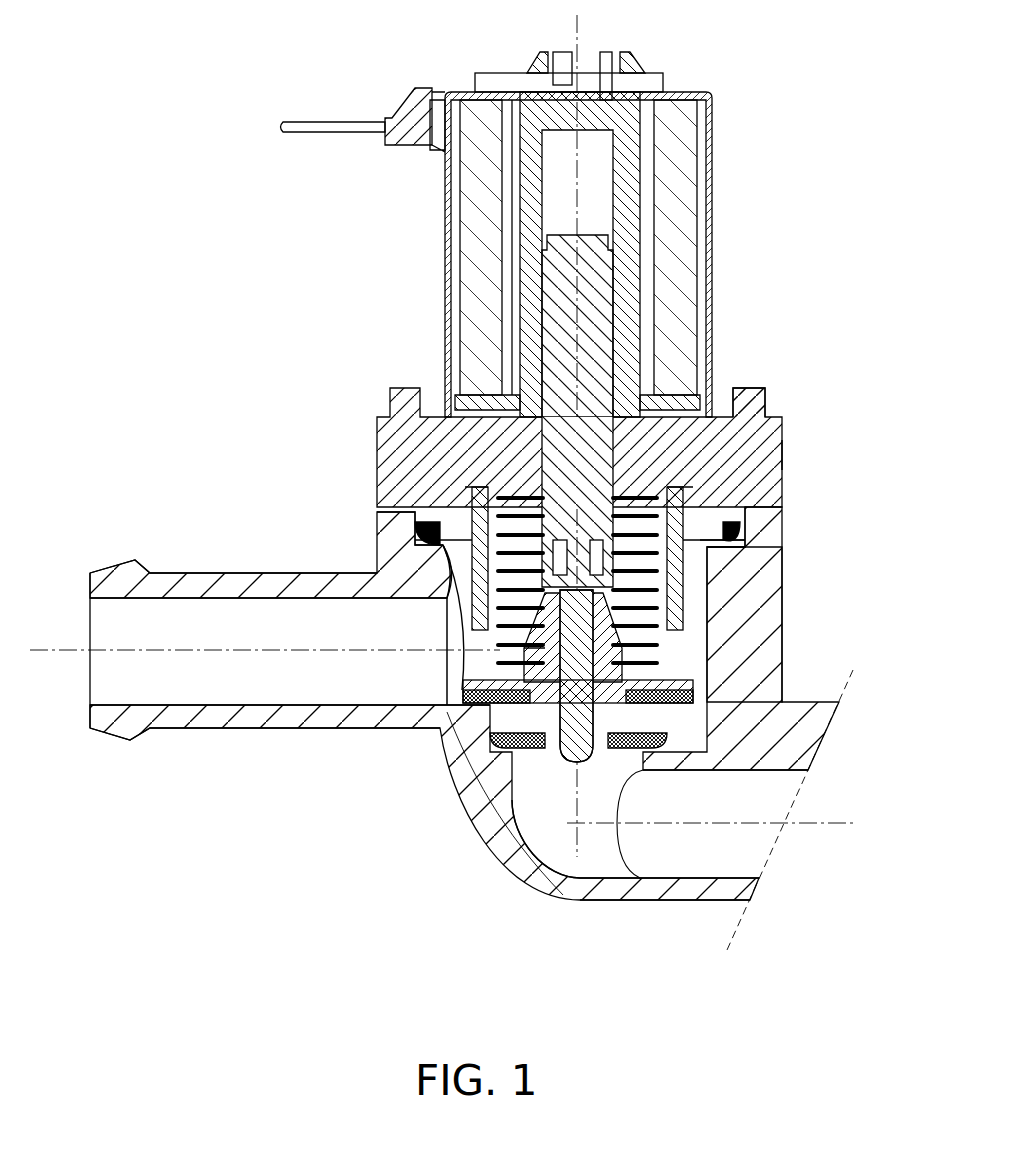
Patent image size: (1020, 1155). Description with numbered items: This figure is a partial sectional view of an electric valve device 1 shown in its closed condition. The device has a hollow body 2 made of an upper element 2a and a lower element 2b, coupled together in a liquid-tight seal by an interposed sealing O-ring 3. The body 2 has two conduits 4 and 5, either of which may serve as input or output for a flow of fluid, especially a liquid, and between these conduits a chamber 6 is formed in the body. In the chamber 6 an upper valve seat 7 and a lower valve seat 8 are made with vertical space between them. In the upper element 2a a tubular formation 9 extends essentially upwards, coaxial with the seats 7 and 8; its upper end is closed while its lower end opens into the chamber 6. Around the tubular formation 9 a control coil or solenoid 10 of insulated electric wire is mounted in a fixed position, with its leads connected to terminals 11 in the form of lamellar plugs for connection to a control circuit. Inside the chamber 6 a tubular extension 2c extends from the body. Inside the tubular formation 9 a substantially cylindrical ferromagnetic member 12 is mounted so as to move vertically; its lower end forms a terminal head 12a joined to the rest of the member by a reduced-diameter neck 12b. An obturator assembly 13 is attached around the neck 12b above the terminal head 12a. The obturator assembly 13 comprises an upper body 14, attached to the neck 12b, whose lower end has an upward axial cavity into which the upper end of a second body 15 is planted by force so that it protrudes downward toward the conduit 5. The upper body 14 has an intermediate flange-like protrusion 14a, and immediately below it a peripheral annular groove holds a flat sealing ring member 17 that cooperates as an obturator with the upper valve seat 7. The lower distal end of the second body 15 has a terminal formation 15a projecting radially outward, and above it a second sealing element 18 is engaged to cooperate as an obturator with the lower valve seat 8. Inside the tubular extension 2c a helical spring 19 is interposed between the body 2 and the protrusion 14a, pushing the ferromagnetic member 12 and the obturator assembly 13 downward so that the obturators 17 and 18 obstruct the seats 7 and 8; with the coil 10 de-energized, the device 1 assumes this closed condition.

The electric valve device 1 is at (786, 240).
The hollow body 2 is at (378, 445).
The upper element 2a is at (750, 388).
The lower element 2b is at (742, 625).
The tubular extension 2c is at (378, 497).
The sealing O-ring 3 is at (782, 532).
The conduit 4 is at (140, 690).
The conduit 5 is at (720, 868).
The chamber 6 is at (742, 546).
The upper valve seat 7 is at (480, 688).
The lower valve seat 8 is at (625, 722).
The tubular formation 9 is at (495, 185).
The control coil or solenoid 10 is at (693, 222).
The terminal 11 is at (330, 122).
The ferromagnetic member 12 is at (545, 305).
The terminal head 12a is at (430, 570).
The neck 12b is at (492, 568).
The obturator assembly 13 is at (462, 690).
The upper body 14 is at (668, 592).
The protrusion 14a is at (488, 652).
The second body 15 is at (612, 655).
The terminal formation 15a is at (562, 765).
The sealing ring member 17 is at (505, 735).
The second sealing element 18 is at (505, 785).
The helical spring 19 is at (782, 462).